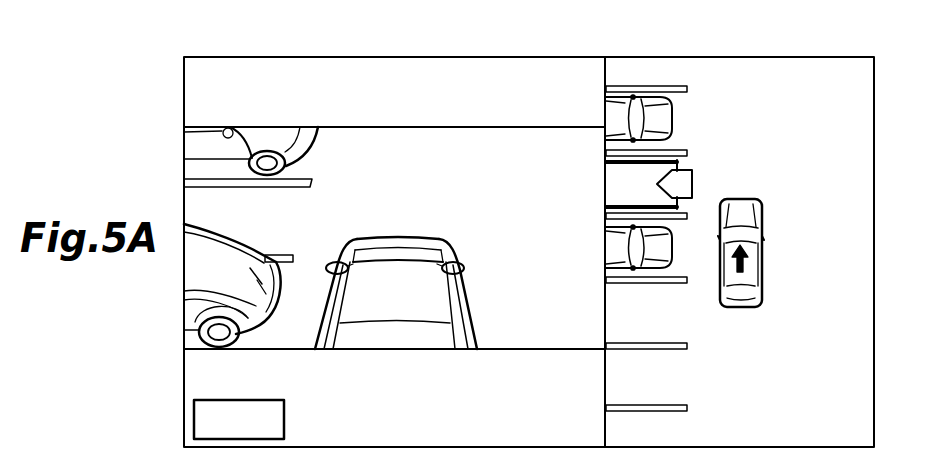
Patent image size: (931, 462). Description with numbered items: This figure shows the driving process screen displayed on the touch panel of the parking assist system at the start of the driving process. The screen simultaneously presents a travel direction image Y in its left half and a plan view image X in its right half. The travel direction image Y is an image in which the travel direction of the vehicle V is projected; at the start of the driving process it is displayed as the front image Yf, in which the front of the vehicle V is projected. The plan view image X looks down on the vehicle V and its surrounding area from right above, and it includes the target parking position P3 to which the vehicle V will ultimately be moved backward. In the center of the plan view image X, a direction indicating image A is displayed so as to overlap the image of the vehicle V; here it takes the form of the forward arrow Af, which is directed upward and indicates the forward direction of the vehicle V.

The travel direction image Y is at (184, 53).
The front image Yf is at (330, 238).
The plan view image X is at (874, 53).
The target parking position P3 is at (693, 166).
The direction indicating image A is at (744, 241).
The forward arrow Af is at (748, 266).
The vehicle V is at (745, 308).